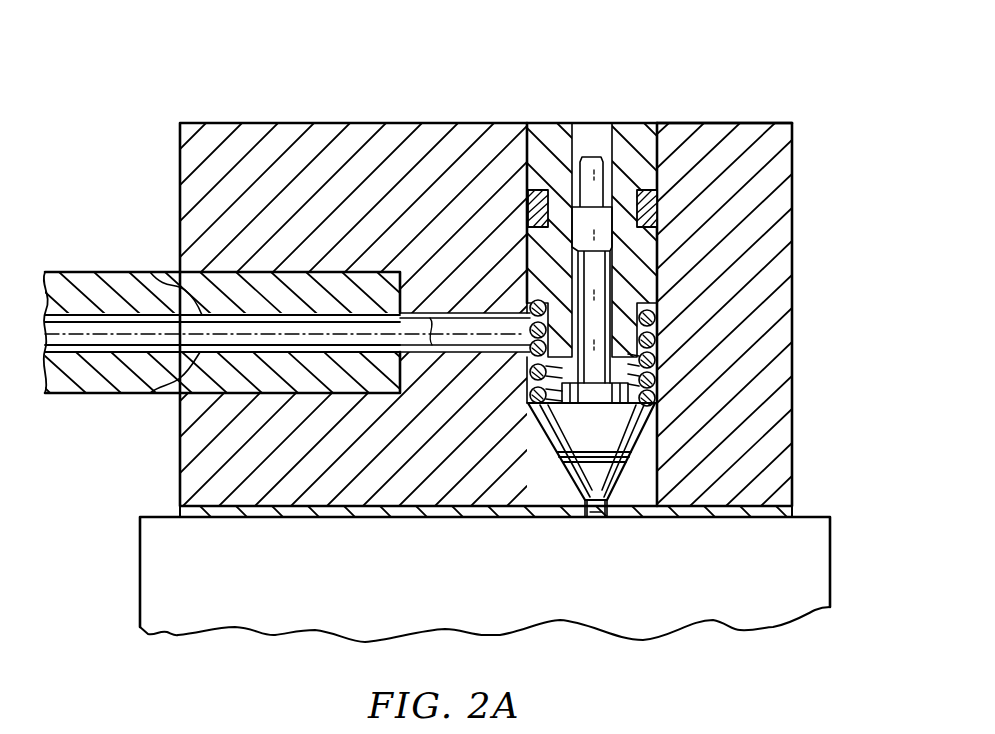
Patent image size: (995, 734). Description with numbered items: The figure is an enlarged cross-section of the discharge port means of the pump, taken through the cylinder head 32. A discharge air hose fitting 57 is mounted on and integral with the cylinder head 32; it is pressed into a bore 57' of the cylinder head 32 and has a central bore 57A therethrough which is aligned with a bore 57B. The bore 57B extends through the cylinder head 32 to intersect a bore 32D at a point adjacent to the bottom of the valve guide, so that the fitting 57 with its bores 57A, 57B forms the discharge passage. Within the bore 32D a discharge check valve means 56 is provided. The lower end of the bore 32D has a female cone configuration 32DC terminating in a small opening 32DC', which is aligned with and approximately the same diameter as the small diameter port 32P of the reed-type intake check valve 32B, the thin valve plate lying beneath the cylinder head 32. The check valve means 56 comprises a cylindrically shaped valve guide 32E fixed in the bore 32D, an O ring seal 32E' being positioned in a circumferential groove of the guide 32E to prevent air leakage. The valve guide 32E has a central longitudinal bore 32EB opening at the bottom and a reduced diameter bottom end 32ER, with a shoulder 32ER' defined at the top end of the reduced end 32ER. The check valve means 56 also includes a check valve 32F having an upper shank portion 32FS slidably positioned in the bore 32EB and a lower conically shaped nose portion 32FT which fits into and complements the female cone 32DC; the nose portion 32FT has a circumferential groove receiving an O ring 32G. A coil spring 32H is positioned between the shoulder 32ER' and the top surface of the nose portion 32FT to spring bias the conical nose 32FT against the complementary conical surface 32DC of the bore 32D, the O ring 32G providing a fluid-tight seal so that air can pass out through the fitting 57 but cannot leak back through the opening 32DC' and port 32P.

The cylinder head 32 is at (245, 123).
The valve guide 32E is at (711, 283).
The central longitudinal bore 32EB is at (683, 123).
The bore 32D is at (545, 123).
The O ring seal 32E' is at (520, 137).
The discharge check valve means 56 is at (597, 150).
The upper shank portion 32FS is at (660, 275).
The shoulder 32ER' is at (714, 323).
The reduced diameter bottom end 32ER is at (715, 370).
The coil spring 32H is at (660, 370).
The check valve 32F is at (535, 400).
The conically shaped nose portion 32FT is at (650, 420).
The female cone configuration 32DC is at (656, 509).
The small opening 32DC' is at (526, 548).
The small diameter port 32P is at (601, 520).
The O ring 32G is at (470, 518).
The reed-type intake check valve 32B is at (800, 504).
The discharge air hose fitting 57 is at (284, 305).
The bore 57' is at (222, 250).
The central bore 57A is at (165, 378).
The bore 57B is at (447, 313).